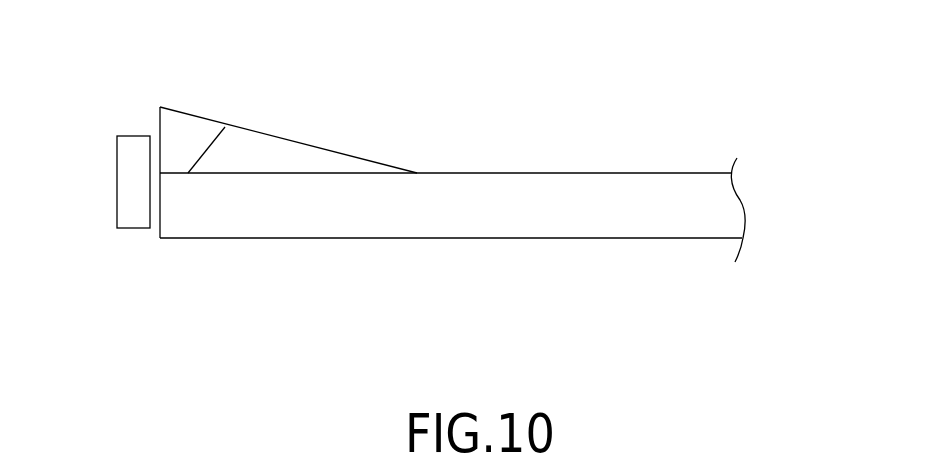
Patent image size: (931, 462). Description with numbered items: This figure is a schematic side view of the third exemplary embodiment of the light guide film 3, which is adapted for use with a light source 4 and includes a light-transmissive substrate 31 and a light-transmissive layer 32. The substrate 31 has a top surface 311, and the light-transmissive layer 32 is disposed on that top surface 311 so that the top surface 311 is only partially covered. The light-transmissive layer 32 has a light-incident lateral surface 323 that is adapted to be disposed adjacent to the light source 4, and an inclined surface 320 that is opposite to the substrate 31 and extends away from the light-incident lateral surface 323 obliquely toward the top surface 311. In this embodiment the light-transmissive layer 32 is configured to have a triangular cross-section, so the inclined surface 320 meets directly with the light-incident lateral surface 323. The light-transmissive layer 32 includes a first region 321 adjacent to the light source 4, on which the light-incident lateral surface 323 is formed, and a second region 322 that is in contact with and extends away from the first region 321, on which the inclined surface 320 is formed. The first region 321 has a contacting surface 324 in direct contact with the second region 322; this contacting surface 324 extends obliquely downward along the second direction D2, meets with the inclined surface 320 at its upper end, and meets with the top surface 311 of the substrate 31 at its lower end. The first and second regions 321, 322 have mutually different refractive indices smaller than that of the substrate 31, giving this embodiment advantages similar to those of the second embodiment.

The light guide film 3 is at (684, 136).
The light-transmissive substrate 31 is at (583, 212).
The top surface 311 is at (585, 173).
The light-transmissive layer 32 is at (146, 85).
The inclined surface 320 is at (353, 158).
The first region 321 is at (177, 165).
The second region 322 is at (288, 163).
The light-incident lateral surface 323 is at (158, 130).
The contacting surface 324 is at (205, 148).
The light source 4 is at (126, 171).
The second direction D2 is at (245, 64).